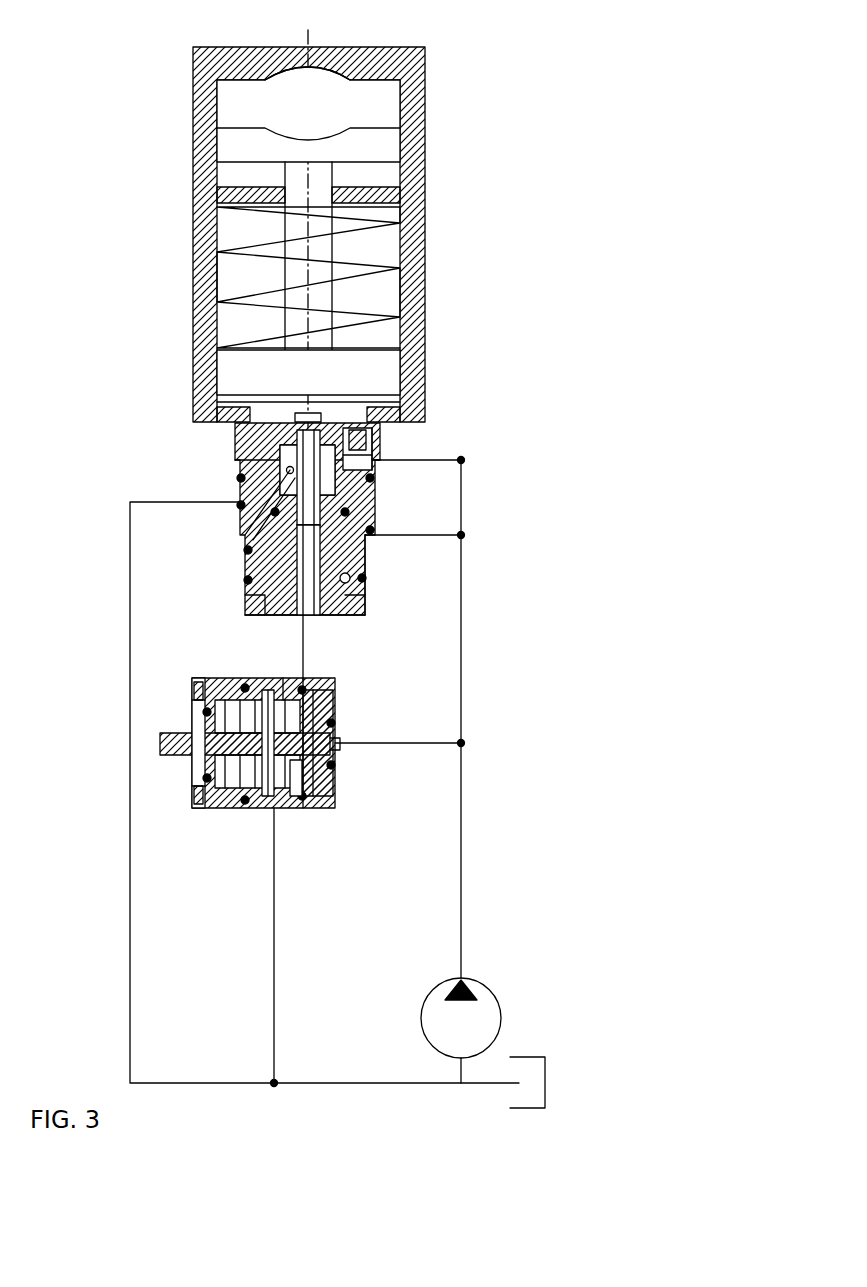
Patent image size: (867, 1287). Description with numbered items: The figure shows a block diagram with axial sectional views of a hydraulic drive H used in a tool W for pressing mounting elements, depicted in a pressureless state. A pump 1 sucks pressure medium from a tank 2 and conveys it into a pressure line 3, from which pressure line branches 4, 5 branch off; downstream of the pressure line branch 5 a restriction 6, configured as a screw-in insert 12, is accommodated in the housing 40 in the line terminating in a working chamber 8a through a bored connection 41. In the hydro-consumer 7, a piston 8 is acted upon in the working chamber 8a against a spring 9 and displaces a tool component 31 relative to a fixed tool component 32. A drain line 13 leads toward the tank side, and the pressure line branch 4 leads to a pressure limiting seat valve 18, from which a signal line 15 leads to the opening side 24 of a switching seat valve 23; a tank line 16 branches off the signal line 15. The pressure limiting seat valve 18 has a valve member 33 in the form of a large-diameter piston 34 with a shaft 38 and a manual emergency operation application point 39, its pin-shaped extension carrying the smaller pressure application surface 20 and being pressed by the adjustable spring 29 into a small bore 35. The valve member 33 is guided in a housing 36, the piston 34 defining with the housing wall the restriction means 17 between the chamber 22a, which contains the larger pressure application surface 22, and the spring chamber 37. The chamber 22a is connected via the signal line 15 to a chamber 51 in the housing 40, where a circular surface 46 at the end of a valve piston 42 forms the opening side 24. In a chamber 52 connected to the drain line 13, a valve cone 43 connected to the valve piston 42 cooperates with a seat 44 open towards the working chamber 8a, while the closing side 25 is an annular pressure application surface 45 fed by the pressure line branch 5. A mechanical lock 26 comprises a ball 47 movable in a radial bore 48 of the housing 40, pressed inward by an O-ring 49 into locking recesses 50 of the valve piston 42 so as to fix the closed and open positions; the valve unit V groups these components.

The pump 1 is at (480, 995).
The tank 2 is at (525, 1060).
The pressure line 3 is at (463, 660).
The pressure line branch 4 is at (425, 745).
The pressure line branch 5 is at (438, 535).
The restriction 6 is at (377, 440).
The hydro-consumer 7 is at (425, 183).
The piston 8 is at (390, 360).
The working chamber 8a is at (268, 416).
The spring 9 is at (375, 265).
The screw-in insert 12 is at (362, 428).
The drain line 13 is at (132, 578).
The signal line 15 is at (303, 645).
The tank line 16 is at (274, 893).
The restriction means 17 is at (283, 688).
The pressure limiting seat valve 18 is at (322, 815).
The smaller pressure application surface 20 is at (332, 738).
The larger pressure application surface 22 is at (320, 705).
The chamber 22a is at (320, 790).
The switching seat valve 23 is at (244, 473).
The opening side 24 is at (310, 617).
The closing side 25 is at (243, 528).
The mechanical lock 26 is at (380, 597).
The adjustable spring 29 is at (232, 770).
The tool component 31 is at (390, 145).
The fixed tool component 32 is at (318, 78).
The valve member 33 is at (222, 808).
The large-diameter piston 34 is at (298, 808).
The small bore 35 is at (318, 752).
The housing 36 is at (215, 808).
The spring chamber 37 is at (265, 808).
The shaft 38 is at (205, 735).
The manual emergency operation application point 39 is at (160, 743).
The housing 40 is at (237, 435).
The bored connection 41 is at (375, 460).
The valve piston 42 is at (250, 565).
The valve cone 43 is at (290, 470).
The seat 44 is at (325, 418).
The annular pressure application surface 45 is at (364, 557).
The circular surface 46 is at (335, 615).
The ball 47 is at (366, 575).
The radial bore 48 is at (357, 615).
The O-ring 49 is at (250, 580).
The locking recesses 50 is at (250, 600).
The chamber 51 is at (268, 615).
The chamber 52 is at (298, 455).
The hydraulic drive H is at (503, 428).
The valve unit V is at (443, 624).
The tool W is at (450, 68).